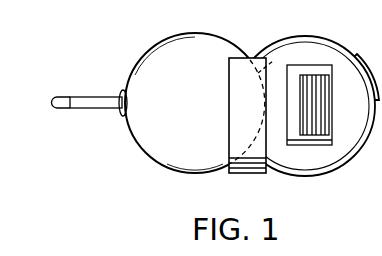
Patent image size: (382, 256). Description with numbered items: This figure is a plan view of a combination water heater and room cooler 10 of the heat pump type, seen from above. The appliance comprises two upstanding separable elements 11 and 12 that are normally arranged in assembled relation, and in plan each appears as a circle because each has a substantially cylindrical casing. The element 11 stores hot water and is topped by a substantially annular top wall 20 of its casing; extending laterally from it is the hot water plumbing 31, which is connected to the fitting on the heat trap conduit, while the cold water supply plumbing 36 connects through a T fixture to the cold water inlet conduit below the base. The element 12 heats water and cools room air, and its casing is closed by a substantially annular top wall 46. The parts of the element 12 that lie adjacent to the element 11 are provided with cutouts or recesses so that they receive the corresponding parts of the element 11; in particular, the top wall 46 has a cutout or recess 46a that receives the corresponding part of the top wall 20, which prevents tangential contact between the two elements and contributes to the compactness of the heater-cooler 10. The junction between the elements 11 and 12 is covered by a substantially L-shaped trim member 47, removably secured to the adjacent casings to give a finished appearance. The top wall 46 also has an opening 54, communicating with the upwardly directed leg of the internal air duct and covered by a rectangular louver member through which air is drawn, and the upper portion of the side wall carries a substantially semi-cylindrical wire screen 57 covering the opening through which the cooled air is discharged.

The combination water heater and room cooler 10 is at (206, 106).
The element 11 is at (188, 149).
The element 12 is at (311, 163).
The top wall 20 is at (197, 52).
The hot water plumbing 31 is at (100, 103).
The cold water supply plumbing 36 is at (62, 96).
The top wall 46 is at (324, 45).
The cutout or recess 46a is at (263, 72).
The trim member 47 is at (248, 174).
The opening 54 is at (332, 106).
The wire screen 57 is at (373, 76).